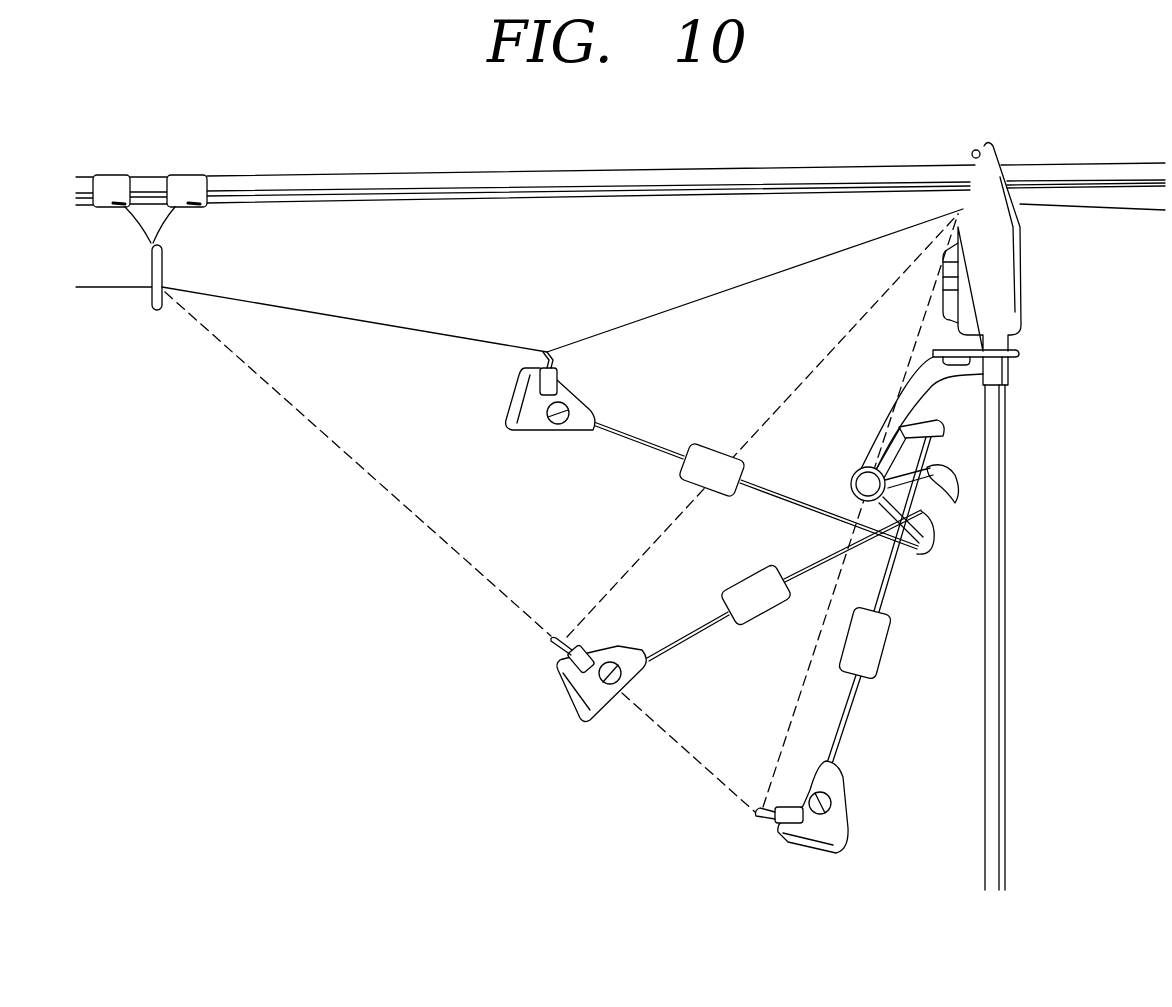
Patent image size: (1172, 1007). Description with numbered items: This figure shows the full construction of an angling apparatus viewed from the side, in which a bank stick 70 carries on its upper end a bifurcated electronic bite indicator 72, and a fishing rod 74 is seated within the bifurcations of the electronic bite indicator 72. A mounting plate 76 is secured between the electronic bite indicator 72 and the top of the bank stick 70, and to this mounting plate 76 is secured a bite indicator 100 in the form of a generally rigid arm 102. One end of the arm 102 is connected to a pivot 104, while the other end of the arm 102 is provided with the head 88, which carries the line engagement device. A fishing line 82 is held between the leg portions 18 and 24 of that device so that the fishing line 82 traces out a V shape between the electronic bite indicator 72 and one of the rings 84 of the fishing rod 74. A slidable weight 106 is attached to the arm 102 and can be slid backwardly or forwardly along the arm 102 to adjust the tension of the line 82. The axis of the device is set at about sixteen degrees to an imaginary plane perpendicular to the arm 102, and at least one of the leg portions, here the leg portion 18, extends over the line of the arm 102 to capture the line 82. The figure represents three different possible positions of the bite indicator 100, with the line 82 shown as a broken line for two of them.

The leg portion 18 is at (550, 350).
The leg portion 24 is at (545, 350).
The bank stick 70 is at (1003, 607).
The electronic bite indicator 72 is at (1002, 246).
The fishing rod 74 is at (695, 177).
The mounting plate 76 is at (1020, 353).
The fishing line 82 is at (732, 290).
The ring 84 is at (162, 278).
The head 88 is at (567, 432).
The bite indicator 100 is at (617, 432).
The arm 102 is at (788, 508).
The pivot 104 is at (860, 472).
The slidable weight 106 is at (692, 475).